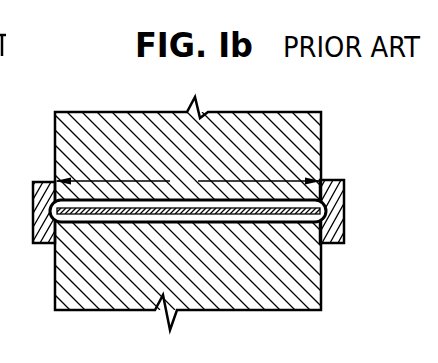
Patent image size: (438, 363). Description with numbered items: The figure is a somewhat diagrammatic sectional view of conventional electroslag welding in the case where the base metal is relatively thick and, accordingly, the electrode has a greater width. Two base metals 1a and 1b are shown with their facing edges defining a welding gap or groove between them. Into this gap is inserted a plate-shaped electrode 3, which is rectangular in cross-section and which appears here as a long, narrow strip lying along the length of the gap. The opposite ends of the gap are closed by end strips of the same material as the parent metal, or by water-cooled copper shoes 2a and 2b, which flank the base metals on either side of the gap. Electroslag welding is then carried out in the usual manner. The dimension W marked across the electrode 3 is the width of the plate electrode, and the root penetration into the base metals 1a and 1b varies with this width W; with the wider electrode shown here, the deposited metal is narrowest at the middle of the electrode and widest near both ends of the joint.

The base metal 1a is at (247, 112).
The base metal 1b is at (128, 297).
The water-cooled copper shoe 2a is at (38, 245).
The water-cooled copper shoe 2b is at (337, 245).
The plate-shaped electrode 3 is at (70, 206).
The width of the plate electrode W is at (188, 182).